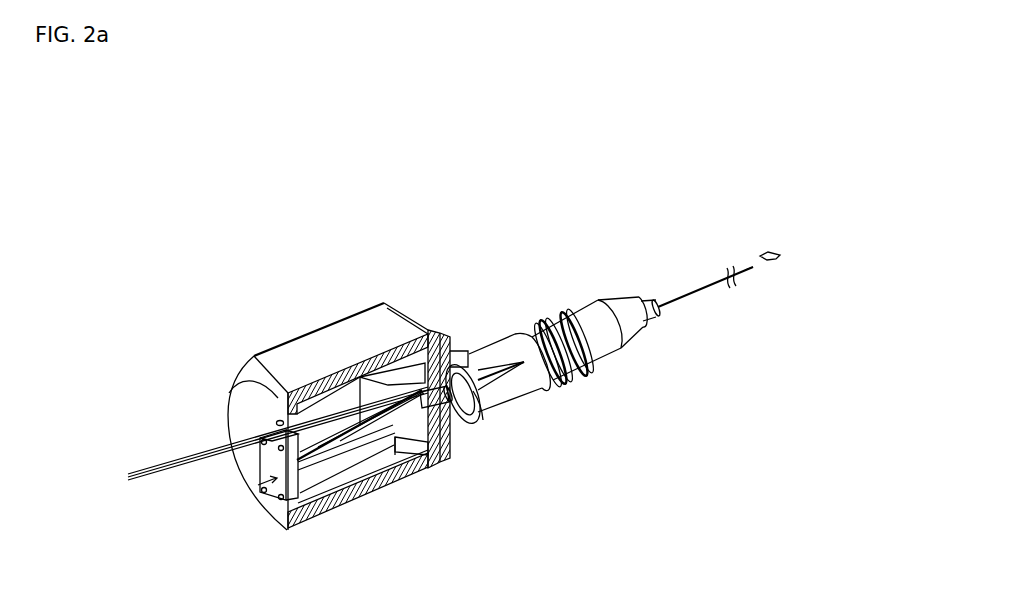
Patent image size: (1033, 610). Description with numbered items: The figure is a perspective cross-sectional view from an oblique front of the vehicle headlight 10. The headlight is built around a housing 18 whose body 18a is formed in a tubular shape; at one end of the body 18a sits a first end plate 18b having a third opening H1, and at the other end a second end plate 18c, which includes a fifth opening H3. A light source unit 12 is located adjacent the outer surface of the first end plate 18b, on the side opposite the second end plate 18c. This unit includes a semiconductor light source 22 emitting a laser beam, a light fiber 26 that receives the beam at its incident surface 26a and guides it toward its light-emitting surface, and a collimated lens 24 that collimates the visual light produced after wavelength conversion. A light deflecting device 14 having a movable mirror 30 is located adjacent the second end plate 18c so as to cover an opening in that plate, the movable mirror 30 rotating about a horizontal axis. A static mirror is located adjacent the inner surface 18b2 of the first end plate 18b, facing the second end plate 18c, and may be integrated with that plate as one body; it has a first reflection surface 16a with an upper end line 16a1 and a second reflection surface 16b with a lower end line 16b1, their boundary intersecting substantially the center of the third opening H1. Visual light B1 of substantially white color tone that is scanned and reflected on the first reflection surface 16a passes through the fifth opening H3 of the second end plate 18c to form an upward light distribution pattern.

The vehicle headlight 10 is at (341, 196).
The light source unit 12 is at (527, 309).
The light deflecting device 14 is at (258, 488).
The first reflection surface 16a is at (398, 372).
The upper end line 16a1 is at (427, 330).
The second reflection surface 16b is at (390, 453).
The lower end line 16b1 is at (413, 458).
The housing 18 is at (331, 320).
The body 18a is at (305, 352).
The first end plate 18b is at (447, 332).
The inner surface 18b2 is at (462, 348).
The second end plate 18c is at (240, 480).
The semiconductor light source 22 is at (773, 250).
The collimated lens 24 is at (476, 420).
The light fiber 26 is at (692, 296).
The incident surface 26a is at (753, 268).
The movable mirror 30 is at (300, 476).
The visual light B1 is at (177, 459).
The third opening H1 is at (452, 440).
The fifth opening H3 is at (278, 421).